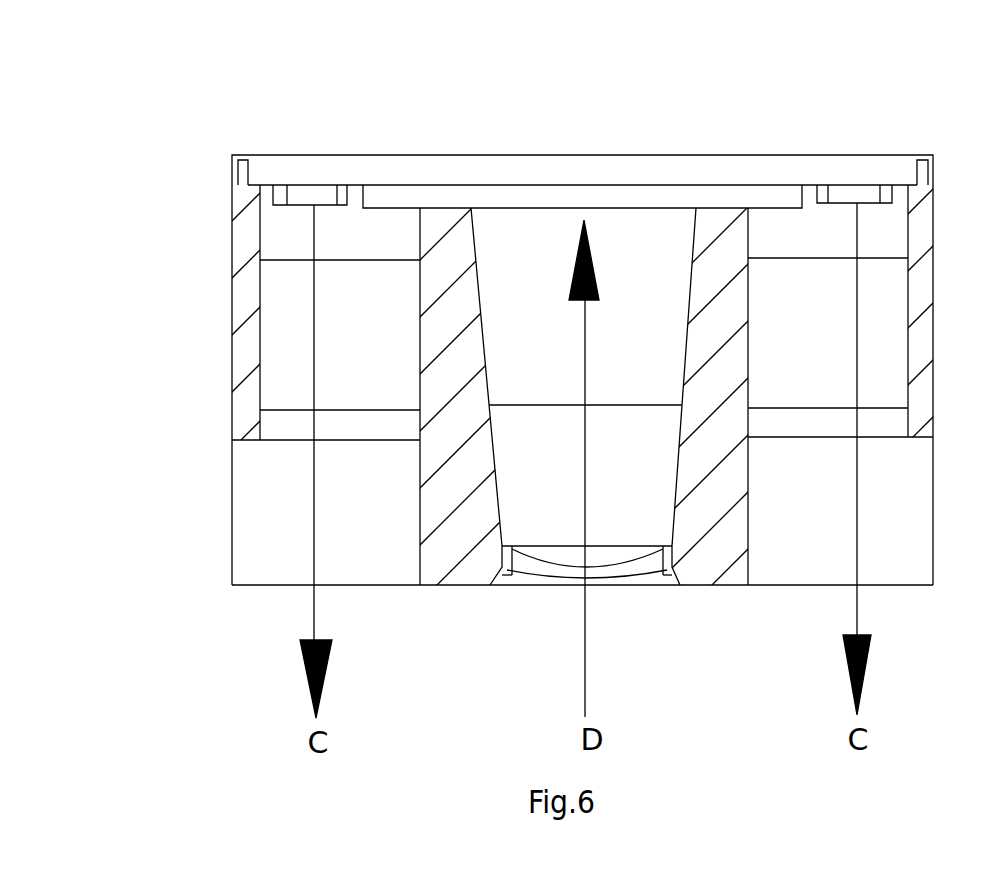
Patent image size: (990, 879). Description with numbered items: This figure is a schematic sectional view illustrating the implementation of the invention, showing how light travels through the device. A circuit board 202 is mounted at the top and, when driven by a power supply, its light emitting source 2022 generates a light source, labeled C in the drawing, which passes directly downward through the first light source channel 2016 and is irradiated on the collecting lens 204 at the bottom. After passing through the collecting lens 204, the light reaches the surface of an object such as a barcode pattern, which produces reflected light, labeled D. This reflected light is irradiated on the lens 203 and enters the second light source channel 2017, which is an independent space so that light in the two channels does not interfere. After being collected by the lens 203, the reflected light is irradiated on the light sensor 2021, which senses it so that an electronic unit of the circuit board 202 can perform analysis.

The circuit board 202 is at (428, 168).
The light sensor 2021 is at (610, 190).
The light emitting source 2022 is at (307, 192).
The second light source channel 2017 is at (680, 215).
The first light source channel 2016 is at (278, 347).
The collecting lens 204 is at (255, 547).
The lens 203 is at (560, 557).